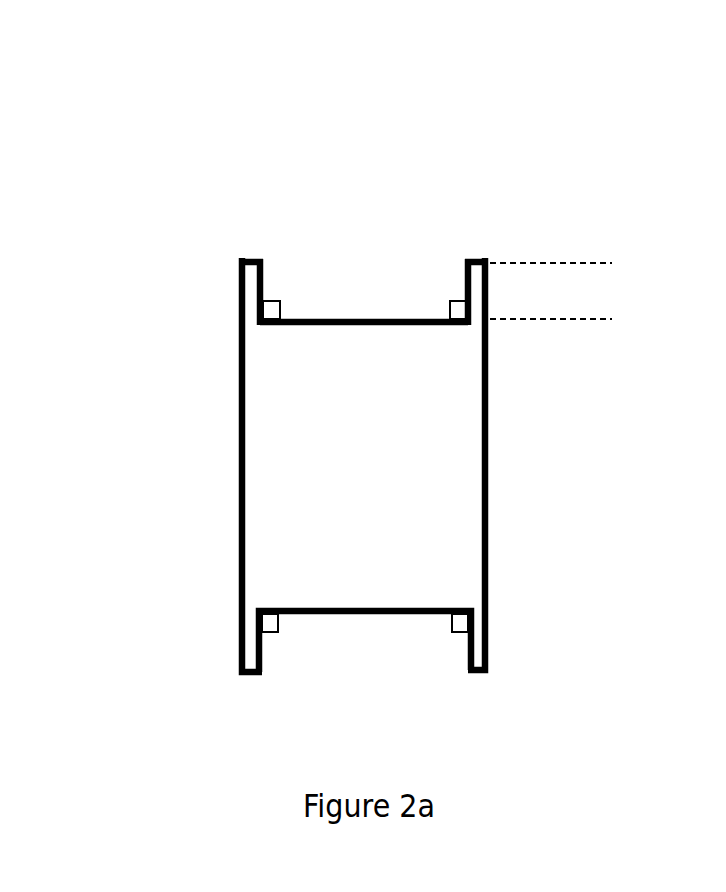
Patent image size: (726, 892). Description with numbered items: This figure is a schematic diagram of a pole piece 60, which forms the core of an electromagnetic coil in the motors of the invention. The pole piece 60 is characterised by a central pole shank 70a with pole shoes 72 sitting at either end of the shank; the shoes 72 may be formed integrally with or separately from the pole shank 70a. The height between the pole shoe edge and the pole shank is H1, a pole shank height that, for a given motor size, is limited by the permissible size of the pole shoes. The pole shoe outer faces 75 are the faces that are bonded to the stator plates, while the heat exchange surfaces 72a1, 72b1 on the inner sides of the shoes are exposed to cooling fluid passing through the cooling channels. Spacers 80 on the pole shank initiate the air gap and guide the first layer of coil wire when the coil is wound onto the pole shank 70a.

The pole piece 60 is at (430, 495).
The pole shank 70a is at (346, 320).
The pole shoes 72 is at (250, 287).
The heat exchange surface 72a1 is at (270, 278).
The heat exchange surface 72b1 is at (463, 275).
The pole shoe outer faces 75 is at (235, 498).
The spacers 80 is at (275, 635).
The pole shank height H1 is at (576, 291).